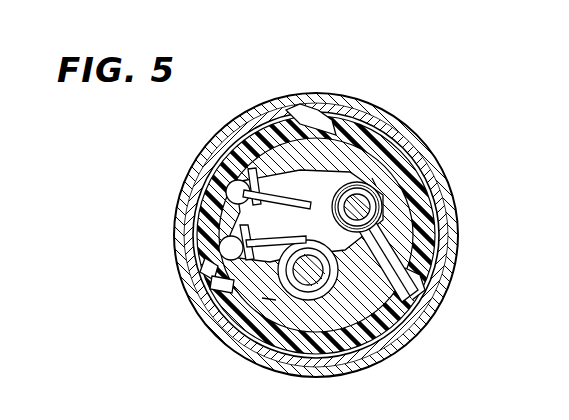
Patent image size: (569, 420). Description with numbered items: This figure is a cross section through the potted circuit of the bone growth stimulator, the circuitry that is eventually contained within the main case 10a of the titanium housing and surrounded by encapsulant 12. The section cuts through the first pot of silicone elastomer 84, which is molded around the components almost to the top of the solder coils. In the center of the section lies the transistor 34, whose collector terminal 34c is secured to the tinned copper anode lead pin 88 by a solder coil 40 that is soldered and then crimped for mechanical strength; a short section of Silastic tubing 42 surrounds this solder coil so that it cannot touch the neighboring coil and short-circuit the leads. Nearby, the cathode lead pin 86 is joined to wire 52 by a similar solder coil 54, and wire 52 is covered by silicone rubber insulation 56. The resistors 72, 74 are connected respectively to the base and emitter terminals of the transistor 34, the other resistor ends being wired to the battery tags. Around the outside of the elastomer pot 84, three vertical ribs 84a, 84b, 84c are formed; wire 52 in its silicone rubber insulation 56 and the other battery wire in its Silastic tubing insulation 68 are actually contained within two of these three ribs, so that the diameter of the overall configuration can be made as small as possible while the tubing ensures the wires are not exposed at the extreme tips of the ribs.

The main case 10a is at (334, 96).
The encapsulant 12 is at (331, 372).
The transistor 34 is at (291, 233).
The collector terminal 34c is at (270, 300).
The solder coil 40 is at (303, 292).
The Silastic tubing 42 is at (420, 324).
The wire 52 is at (347, 215).
The solder coil 54 is at (372, 180).
The silicone rubber insulation 56 is at (385, 248).
The Silastic tubing insulation 68 is at (202, 290).
The resistor 72 is at (232, 252).
The resistor 74 is at (238, 192).
The elastomer pot 84 is at (395, 147).
The vertical rib 84a is at (285, 106).
The vertical rib 84b is at (417, 279).
The vertical rib 84c is at (213, 270).
The cathode lead pin 86 is at (336, 199).
The anode lead pin 88 is at (385, 352).